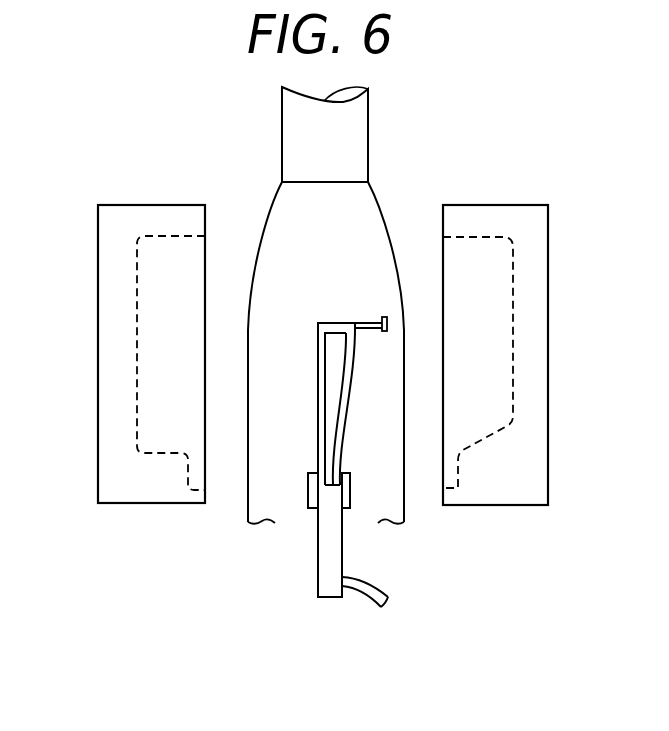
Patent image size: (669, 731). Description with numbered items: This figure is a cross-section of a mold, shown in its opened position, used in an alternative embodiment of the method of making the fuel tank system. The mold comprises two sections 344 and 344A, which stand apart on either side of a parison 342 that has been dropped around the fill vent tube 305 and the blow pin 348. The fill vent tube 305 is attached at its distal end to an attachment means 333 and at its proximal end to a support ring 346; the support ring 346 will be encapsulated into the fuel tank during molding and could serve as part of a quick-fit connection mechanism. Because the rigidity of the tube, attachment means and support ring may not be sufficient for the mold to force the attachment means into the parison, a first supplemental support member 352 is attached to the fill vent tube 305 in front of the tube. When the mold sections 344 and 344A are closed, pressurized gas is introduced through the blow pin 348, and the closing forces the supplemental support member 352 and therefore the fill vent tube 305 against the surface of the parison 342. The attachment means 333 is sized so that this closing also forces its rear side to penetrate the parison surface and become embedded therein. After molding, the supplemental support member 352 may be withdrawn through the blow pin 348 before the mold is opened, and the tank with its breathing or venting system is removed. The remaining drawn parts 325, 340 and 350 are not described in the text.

The fill vent tube 305 is at (352, 398).
The mounting arm 325 is at (343, 322).
The attachment means 333 is at (381, 317).
The container neck 340 is at (368, 131).
The parison 342 is at (383, 198).
The mold section 344 is at (105, 243).
The mold section 344A is at (540, 257).
The support ring 346 is at (308, 510).
The blow pin 348 is at (340, 557).
The outlet tube 350 is at (378, 603).
The first supplemental support member 352 is at (318, 358).